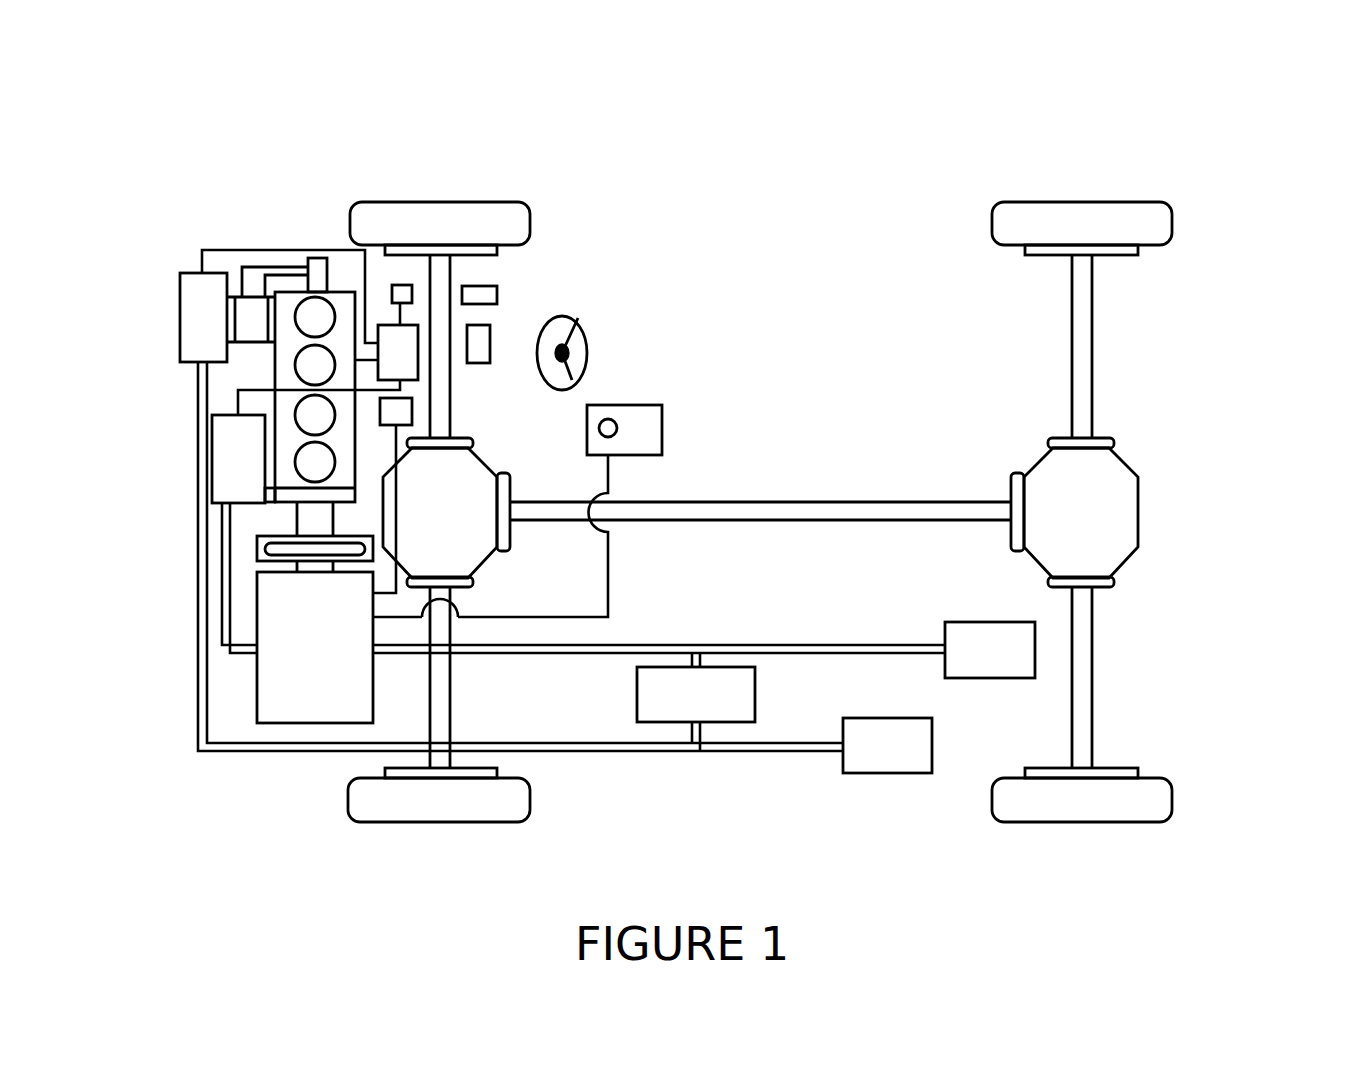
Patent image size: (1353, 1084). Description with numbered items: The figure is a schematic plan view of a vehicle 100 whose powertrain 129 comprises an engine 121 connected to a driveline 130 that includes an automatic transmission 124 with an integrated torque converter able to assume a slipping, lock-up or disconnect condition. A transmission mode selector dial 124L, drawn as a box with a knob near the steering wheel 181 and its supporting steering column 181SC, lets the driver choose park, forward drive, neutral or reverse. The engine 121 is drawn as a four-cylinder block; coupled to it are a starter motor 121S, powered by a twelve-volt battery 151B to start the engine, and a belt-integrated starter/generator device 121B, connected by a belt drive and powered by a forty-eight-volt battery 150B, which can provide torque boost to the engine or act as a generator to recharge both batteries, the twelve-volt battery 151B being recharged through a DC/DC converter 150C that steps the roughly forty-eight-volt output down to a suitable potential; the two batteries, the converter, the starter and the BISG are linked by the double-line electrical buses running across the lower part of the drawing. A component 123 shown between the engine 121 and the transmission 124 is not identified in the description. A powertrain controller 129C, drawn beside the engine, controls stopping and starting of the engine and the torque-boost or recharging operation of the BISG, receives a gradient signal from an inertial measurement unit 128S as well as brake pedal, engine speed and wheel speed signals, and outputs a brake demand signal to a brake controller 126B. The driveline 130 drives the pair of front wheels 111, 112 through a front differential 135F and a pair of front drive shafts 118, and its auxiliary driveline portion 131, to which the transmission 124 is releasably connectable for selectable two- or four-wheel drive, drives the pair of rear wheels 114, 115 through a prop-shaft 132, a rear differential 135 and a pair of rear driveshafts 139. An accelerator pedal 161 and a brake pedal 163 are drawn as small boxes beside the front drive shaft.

The vehicle 100 is at (1067, 112).
The front vehicle wheel 111 is at (440, 200).
The front vehicle wheel 112 is at (398, 812).
The rear wheel 114 is at (1128, 215).
The rear wheel 115 is at (1130, 818).
The front drive shafts 118 is at (450, 267).
The engine 121 is at (295, 372).
The belt-integrated starter/generator device (BISG) 121B is at (180, 287).
The starter motor 121S is at (213, 457).
The clutch 123 is at (262, 548).
The automatic transmission 124 is at (277, 688).
The transmission mode selector dial 124L is at (613, 421).
The brake controller 126B is at (393, 425).
The inertial measurement unit (IMU) 128S is at (398, 285).
The powertrain 129 is at (1252, 362).
The powertrain controller 129C is at (390, 325).
The driveline 130 is at (825, 242).
The auxiliary driveline portion 131 is at (868, 340).
The auxiliary driveshaft or prop-shaft 132 is at (794, 502).
The rear differential 135 is at (1140, 513).
The front differential 135F is at (480, 557).
The rear driveshafts 139 is at (1087, 362).
The 48V battery 150B is at (877, 773).
The DC/DC converter 150C is at (720, 718).
The 12V battery 151B is at (993, 678).
The accelerator pedal 161 is at (498, 293).
The brake pedal 163 is at (490, 345).
The steering wheel 181 is at (578, 318).
The steering column 181SC is at (568, 353).